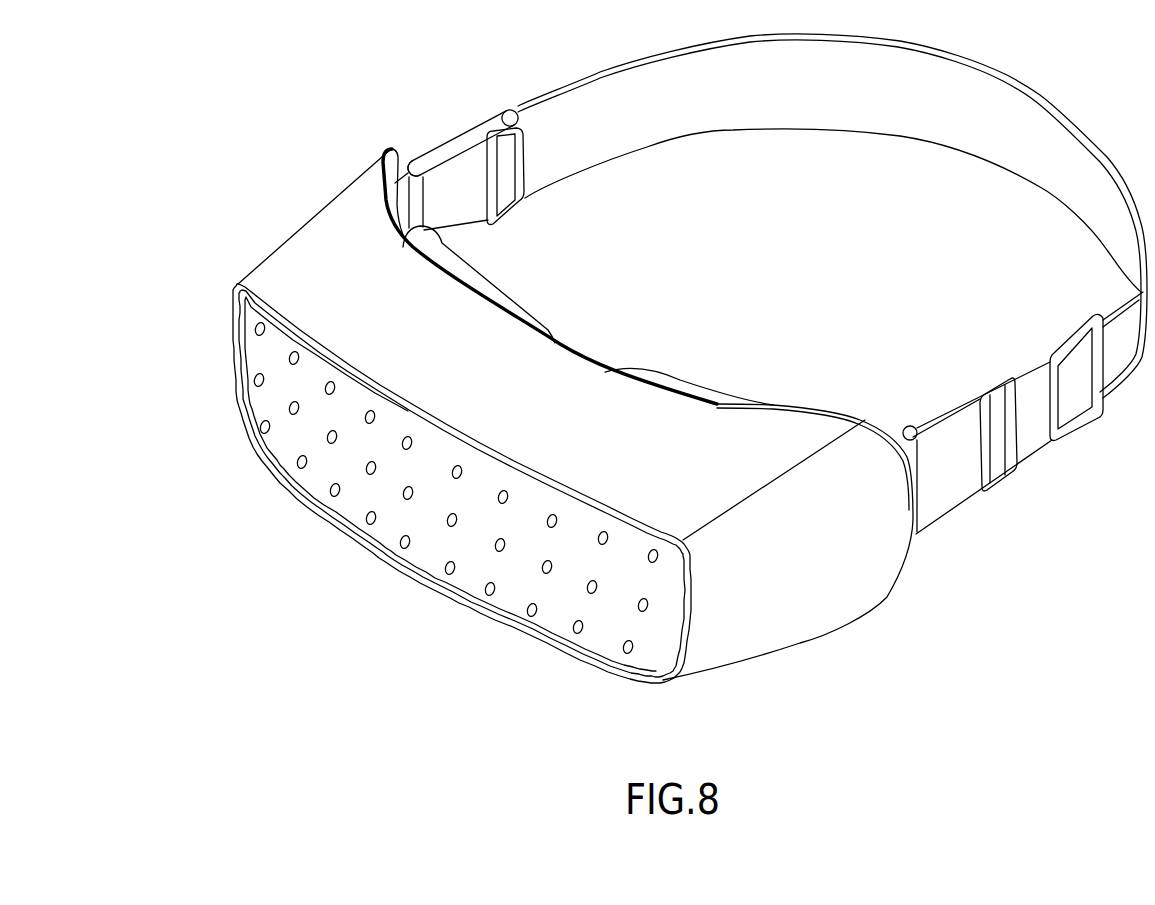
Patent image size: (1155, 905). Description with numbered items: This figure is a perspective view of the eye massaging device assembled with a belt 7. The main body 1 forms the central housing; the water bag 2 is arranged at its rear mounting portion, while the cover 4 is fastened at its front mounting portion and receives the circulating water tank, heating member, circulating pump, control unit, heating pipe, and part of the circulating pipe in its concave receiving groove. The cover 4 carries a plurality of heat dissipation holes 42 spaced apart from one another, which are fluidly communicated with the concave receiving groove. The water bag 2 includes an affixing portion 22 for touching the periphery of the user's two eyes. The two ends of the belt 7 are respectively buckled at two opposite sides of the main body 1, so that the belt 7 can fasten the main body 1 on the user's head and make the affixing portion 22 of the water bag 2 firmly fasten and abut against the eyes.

The main body 1 is at (403, 163).
The water bag 2 is at (553, 300).
The cover 4 is at (248, 250).
The heat dissipation holes 42 is at (298, 464).
The affixing portion 22 is at (703, 386).
The belt 7 is at (1040, 106).